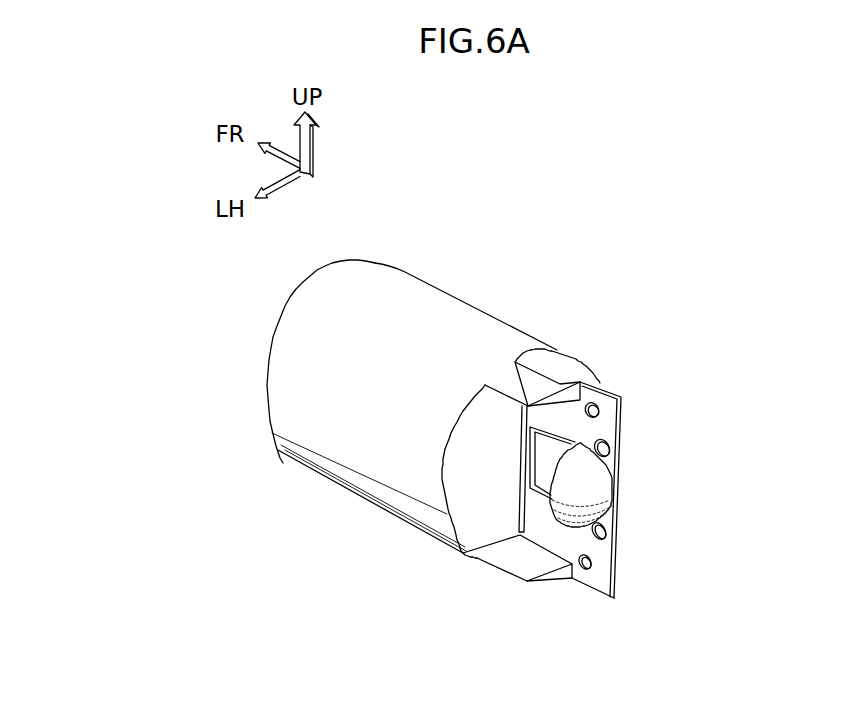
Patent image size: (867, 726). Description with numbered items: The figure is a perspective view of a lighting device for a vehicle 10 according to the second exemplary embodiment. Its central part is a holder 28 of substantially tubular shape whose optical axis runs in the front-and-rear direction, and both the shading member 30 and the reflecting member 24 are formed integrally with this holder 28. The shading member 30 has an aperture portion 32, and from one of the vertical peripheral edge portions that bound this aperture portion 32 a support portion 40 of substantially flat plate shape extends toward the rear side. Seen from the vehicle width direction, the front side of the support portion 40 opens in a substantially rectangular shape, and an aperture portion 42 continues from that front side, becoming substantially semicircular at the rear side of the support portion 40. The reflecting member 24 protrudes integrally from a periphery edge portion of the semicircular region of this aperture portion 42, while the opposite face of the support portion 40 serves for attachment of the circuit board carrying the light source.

The lighting device for a vehicle 10 is at (472, 288).
The reflecting member 24 is at (592, 492).
The holder 28 is at (362, 458).
The shading member 30 is at (468, 528).
The aperture portion 32 is at (522, 467).
The support portion 40 is at (620, 390).
The aperture portion 42 is at (540, 497).